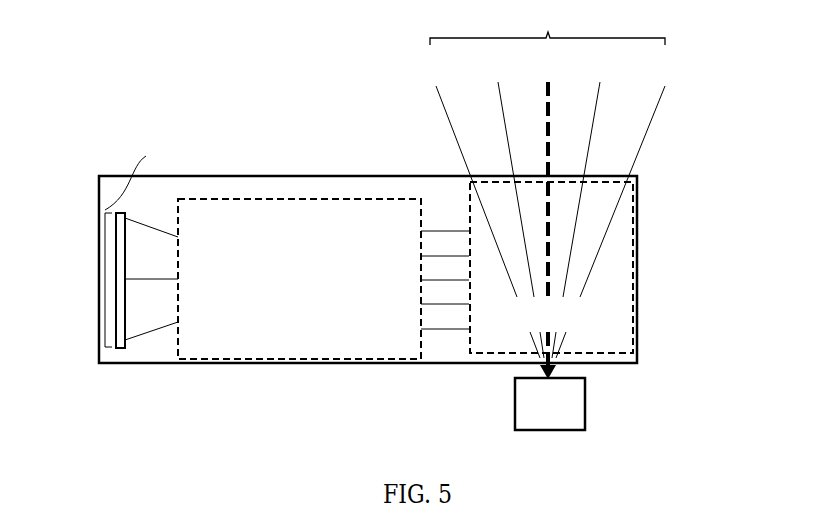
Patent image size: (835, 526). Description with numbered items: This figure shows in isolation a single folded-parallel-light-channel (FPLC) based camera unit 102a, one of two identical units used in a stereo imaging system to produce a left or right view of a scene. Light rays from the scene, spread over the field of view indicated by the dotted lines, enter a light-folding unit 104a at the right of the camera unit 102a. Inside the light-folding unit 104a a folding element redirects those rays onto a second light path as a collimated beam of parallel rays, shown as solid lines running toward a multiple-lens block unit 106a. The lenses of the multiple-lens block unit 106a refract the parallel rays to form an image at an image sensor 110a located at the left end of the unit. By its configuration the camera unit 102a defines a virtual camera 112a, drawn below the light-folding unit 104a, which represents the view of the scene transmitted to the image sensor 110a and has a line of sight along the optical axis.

The FPLC-based camera unit 102a is at (704, 271).
The light-folding unit 104a is at (637, 212).
The multiple-lens block unit 106a is at (285, 198).
The image sensor 110a is at (98, 312).
The virtual camera 112a is at (588, 417).